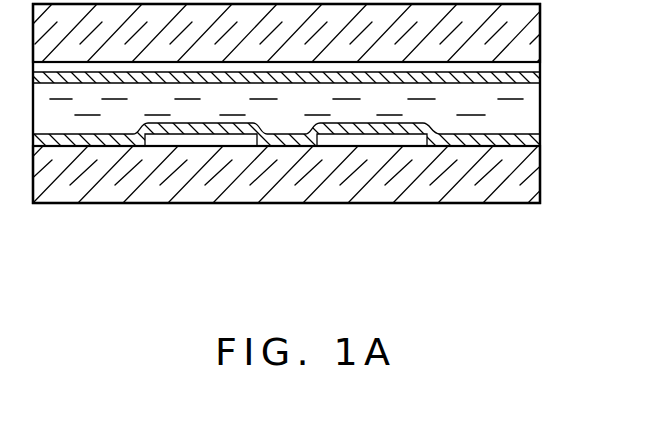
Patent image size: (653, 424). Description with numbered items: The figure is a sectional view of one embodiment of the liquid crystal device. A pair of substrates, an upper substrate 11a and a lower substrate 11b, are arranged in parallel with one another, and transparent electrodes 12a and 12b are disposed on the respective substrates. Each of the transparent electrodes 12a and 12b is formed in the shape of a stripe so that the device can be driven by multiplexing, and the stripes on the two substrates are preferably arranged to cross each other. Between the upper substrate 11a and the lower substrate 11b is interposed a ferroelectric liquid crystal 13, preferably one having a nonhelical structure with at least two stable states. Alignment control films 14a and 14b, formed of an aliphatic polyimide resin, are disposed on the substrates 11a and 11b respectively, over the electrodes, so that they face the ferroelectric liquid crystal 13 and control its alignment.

The upper substrate 11a is at (536, 25).
The transparent electrode 12a is at (536, 68).
The alignment control film 14a is at (536, 78).
The ferroelectric liquid crystal 13 is at (536, 113).
The alignment control film 14b is at (536, 138).
The transparent electrode 12b is at (210, 137).
The lower substrate 11b is at (536, 180).